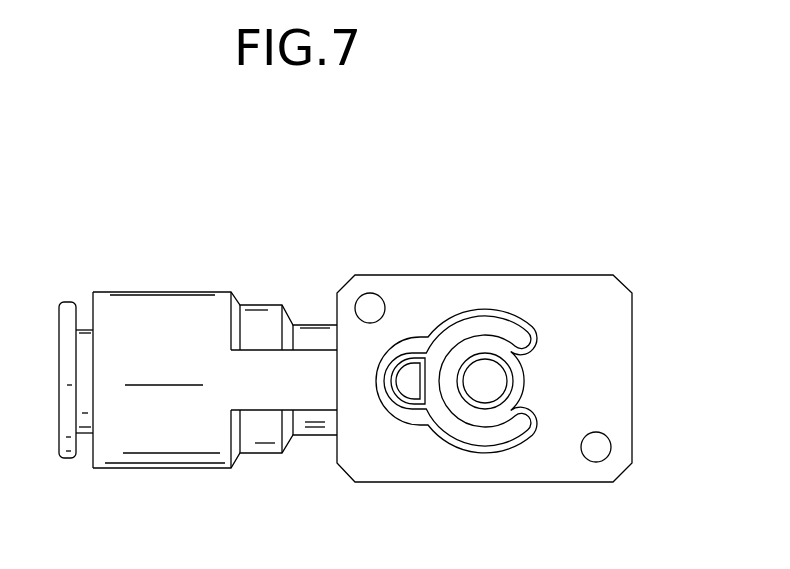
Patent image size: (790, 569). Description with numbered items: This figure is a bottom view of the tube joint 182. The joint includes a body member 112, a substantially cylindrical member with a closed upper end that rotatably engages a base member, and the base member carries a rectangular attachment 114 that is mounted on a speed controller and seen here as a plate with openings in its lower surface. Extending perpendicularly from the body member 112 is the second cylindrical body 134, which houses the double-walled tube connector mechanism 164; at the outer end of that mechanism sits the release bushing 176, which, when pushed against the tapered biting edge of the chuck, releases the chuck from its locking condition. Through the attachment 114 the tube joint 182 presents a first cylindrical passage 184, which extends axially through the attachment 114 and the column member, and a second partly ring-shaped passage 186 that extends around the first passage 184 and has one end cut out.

The body member 112 is at (632, 323).
The attachment 114 is at (612, 408).
The second cylindrical body 134 is at (200, 452).
The double-walled tube connector mechanism 164 is at (71, 297).
The release bushing 176 is at (72, 450).
The tube joint 182 is at (472, 245).
The first cylindrical passage 184 is at (492, 381).
The second partly ring-shaped passage 186 is at (470, 430).